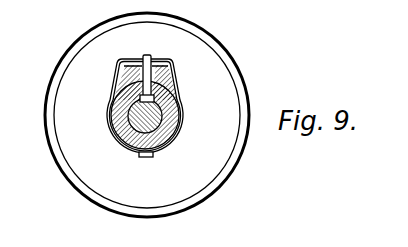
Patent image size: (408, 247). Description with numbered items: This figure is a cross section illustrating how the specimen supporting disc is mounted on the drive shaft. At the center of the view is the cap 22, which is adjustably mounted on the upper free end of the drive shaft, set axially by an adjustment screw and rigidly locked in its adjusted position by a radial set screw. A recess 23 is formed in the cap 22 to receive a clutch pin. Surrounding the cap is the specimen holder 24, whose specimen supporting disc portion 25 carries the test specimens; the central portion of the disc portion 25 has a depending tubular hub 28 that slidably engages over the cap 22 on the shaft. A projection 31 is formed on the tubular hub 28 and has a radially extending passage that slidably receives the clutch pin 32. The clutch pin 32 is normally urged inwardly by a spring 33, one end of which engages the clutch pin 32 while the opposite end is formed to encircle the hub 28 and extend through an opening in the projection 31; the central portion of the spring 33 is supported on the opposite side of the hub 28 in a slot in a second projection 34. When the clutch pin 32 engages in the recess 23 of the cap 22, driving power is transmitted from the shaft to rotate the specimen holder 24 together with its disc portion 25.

The cap 22 is at (176, 112).
The recess 23 is at (170, 96).
The specimen holder 24 is at (226, 146).
The specimen supporting disc portion 25 is at (226, 79).
The tubular hub 28 is at (172, 143).
The projection 31 is at (162, 74).
The clutch pin 32 is at (148, 55).
The spring 33 is at (116, 98).
The projection 34 is at (148, 157).